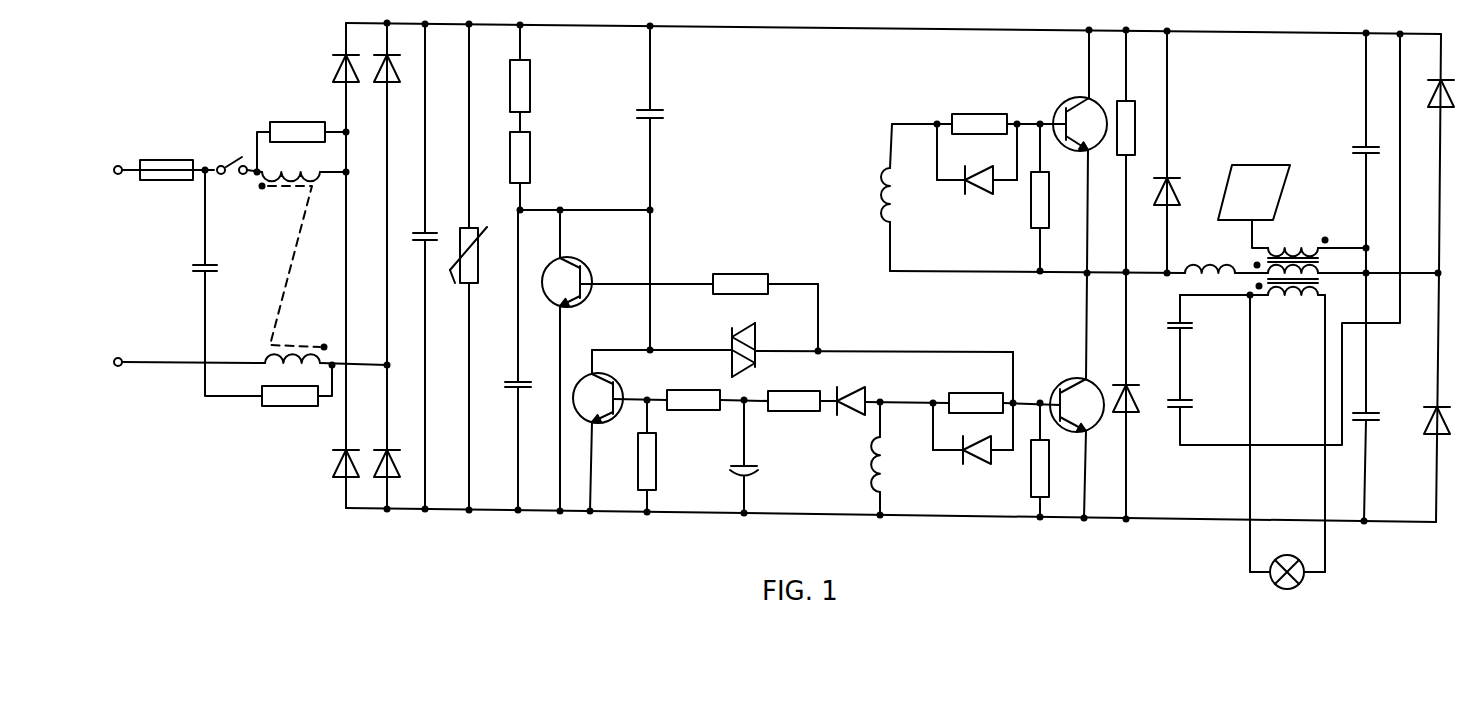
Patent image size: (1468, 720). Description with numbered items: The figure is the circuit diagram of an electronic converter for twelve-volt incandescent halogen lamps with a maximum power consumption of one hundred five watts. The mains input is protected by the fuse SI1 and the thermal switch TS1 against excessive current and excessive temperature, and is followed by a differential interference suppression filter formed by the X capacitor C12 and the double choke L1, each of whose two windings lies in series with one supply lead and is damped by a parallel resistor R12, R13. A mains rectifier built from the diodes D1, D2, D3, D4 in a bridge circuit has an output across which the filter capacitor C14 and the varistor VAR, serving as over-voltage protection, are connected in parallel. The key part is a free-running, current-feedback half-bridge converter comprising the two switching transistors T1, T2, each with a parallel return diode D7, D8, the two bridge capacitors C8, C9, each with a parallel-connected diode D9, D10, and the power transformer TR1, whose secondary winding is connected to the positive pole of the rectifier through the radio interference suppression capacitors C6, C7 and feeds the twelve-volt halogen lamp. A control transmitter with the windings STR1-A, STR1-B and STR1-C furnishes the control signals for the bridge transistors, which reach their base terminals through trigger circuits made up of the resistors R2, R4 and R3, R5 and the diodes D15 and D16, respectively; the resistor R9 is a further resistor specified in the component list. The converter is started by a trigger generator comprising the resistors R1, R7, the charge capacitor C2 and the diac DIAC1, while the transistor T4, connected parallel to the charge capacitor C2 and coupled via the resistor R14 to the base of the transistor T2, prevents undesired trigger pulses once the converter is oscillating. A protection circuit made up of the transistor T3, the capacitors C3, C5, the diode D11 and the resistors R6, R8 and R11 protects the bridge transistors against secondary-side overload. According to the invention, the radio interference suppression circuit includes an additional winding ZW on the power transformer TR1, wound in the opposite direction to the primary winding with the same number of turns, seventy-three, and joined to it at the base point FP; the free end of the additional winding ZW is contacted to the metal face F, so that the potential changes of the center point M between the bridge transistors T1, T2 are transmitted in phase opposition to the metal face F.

The fuse SI1 is at (166, 157).
The thermal switch TS1 is at (222, 154).
The double choke L1 is at (291, 267).
The parallel resistor R12 is at (301, 135).
The parallel resistor R13 is at (268, 399).
The X capacitor C12 is at (225, 268).
The diode D1 is at (329, 68).
The diode D2 is at (324, 467).
The diode D3 is at (396, 82).
The diode D4 is at (395, 452).
The filter capacitor C14 is at (440, 216).
The varistor VAR is at (482, 269).
The charge capacitor C2 is at (504, 400).
The resistor R7 is at (535, 86).
The resistor R1 is at (535, 157).
The capacitor C5 is at (660, 104).
The transistor T4 is at (568, 271).
The transistor T3 is at (607, 393).
The resistor R14 is at (740, 272).
The diac DIAC1 is at (707, 350).
The resistor R11 is at (692, 388).
The resistor R6 is at (794, 388).
The diode D11 is at (855, 386).
The resistor R8 is at (661, 461).
The capacitor C3 is at (735, 454).
The control transmitter winding STR1-B is at (831, 464).
The resistor R3 is at (976, 389).
The diode D16 is at (969, 468).
The switching transistor T2 is at (1072, 393).
The resistor R5 is at (1055, 469).
The return diode D8 is at (1135, 413).
The center point M is at (1084, 278).
The control transmitter winding STR1-C is at (838, 195).
The resistor R2 is at (979, 113).
The diode D15 is at (975, 200).
The resistor R4 is at (1055, 200).
The switching transistor T1 is at (1075, 114).
The resistor R9 is at (1138, 116).
The return diode D7 is at (1178, 179).
The control transmitter winding STR1-A is at (1196, 257).
The power transformer TR1 is at (1323, 226).
The additional winding ZW is at (1309, 229).
The base point FP is at (1380, 236).
The metal face F is at (1254, 192).
The bridge capacitor C9 is at (1351, 135).
The diode D9 is at (1428, 108).
The bridge capacitor C8 is at (1374, 404).
The diode D10 is at (1418, 439).
The radio interference suppression capacitor C6 is at (1194, 328).
The radio interference suppression capacitor C7 is at (1194, 403).